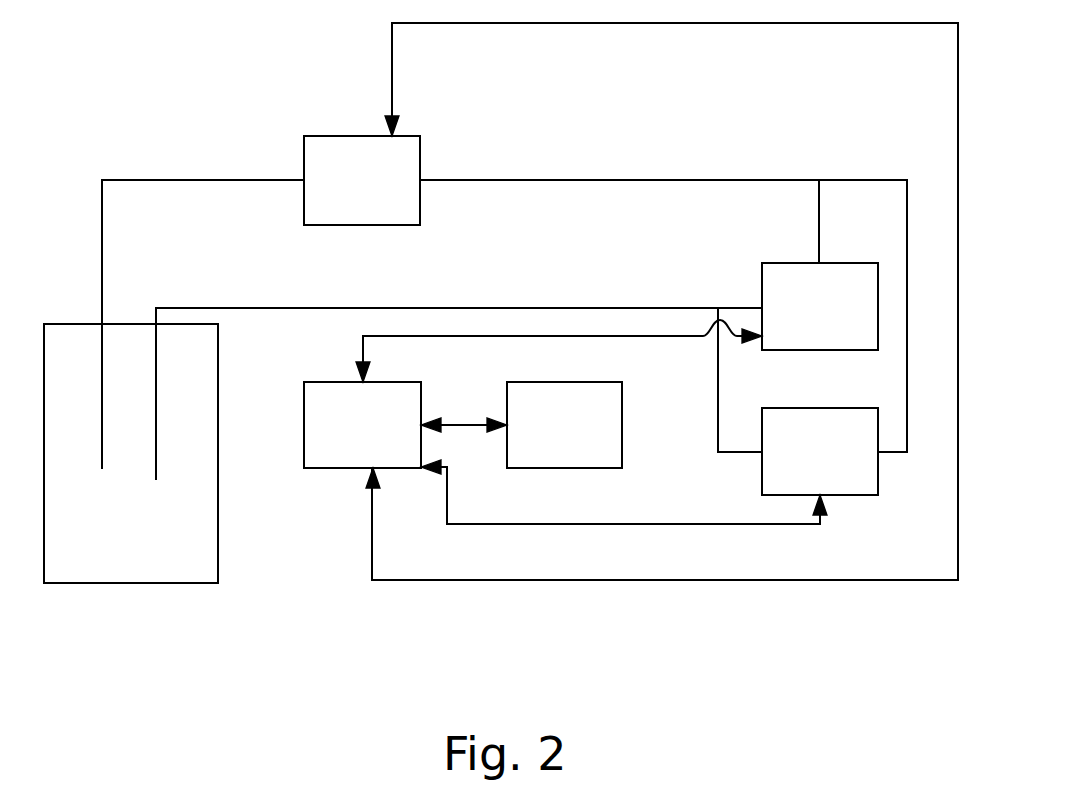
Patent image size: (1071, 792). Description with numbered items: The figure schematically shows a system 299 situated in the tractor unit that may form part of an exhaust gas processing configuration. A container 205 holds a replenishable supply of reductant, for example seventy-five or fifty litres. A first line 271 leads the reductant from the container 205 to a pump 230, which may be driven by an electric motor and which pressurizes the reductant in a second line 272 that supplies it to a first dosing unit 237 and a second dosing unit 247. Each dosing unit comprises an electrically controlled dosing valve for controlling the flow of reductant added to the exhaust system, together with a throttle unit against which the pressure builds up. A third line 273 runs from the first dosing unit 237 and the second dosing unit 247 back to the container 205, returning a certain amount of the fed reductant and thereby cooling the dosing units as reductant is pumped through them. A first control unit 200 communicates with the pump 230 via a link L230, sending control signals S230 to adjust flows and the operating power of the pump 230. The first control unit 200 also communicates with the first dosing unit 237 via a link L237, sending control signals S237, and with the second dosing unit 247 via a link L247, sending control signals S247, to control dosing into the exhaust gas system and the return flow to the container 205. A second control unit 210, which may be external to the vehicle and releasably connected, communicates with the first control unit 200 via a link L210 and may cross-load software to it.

The system 299 is at (297, 77).
The container 205 is at (73, 584).
The pump 230 is at (383, 193).
The first dosing unit 237 is at (841, 317).
The second dosing unit 247 is at (841, 462).
The first control unit 200 is at (383, 438).
The second control unit 210 is at (585, 438).
The first line 271 is at (159, 180).
The second line 272 is at (567, 180).
The third line 273 is at (592, 308).
The control signals S230 is at (662, 323).
The link L230 is at (668, 581).
The control signals S237 is at (559, 351).
The link L237 is at (682, 337).
The control signals S247 is at (624, 509).
The link L247 is at (643, 523).
The link L210 is at (462, 426).